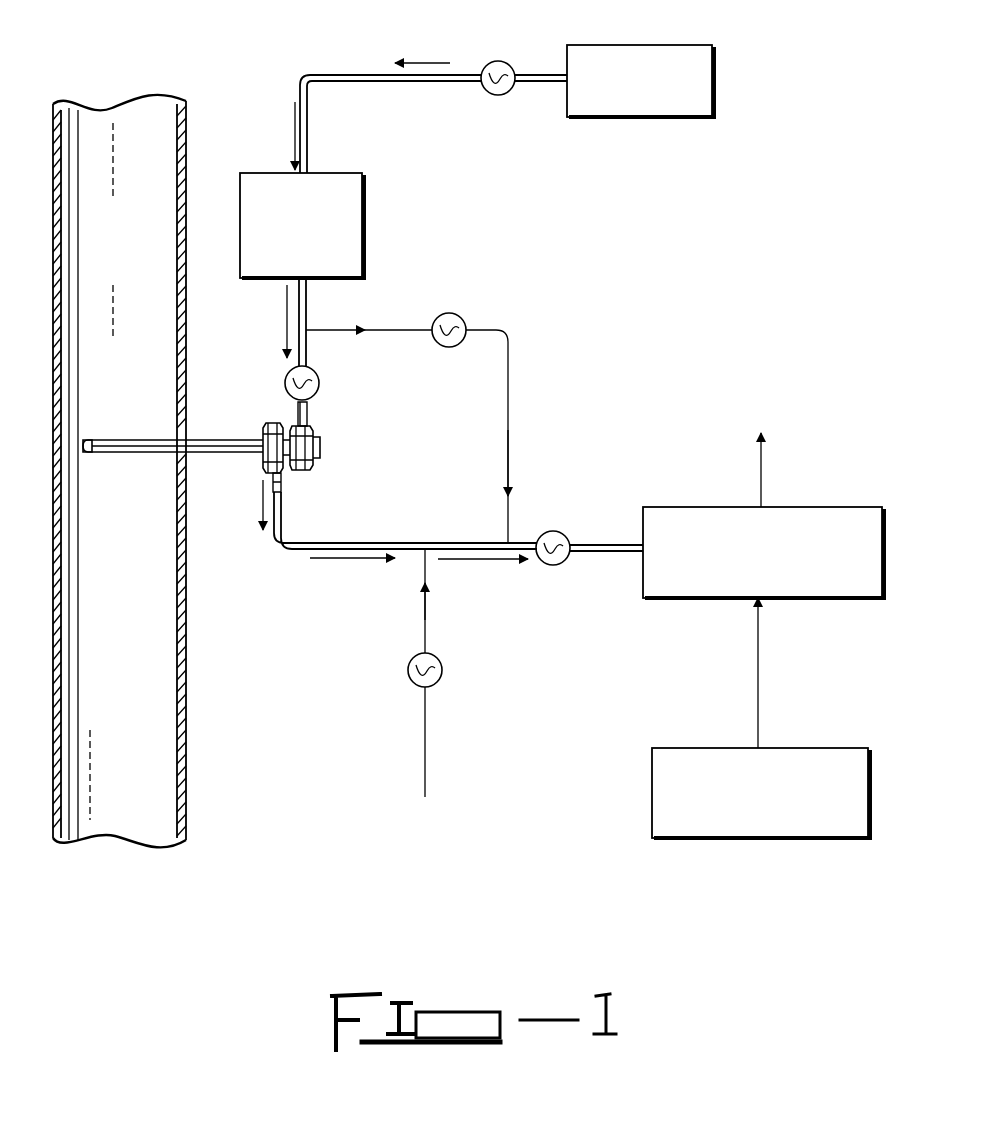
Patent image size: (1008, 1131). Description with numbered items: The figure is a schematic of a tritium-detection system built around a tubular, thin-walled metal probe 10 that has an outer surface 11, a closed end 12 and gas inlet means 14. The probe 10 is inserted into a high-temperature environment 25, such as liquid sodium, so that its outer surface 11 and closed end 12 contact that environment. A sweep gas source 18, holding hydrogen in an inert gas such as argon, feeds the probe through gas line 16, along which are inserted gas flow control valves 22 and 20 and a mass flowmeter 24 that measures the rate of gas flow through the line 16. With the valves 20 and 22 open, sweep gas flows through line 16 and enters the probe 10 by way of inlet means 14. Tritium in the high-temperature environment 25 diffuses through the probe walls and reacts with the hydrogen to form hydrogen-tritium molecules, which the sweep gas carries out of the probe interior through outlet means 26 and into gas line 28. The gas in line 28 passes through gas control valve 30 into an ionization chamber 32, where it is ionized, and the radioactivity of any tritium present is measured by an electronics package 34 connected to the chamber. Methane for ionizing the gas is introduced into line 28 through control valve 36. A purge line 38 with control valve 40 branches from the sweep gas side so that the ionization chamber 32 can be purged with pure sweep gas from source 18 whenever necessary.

The probe 10 is at (232, 436).
The outer surface 11 is at (150, 453).
The closed end 12 is at (94, 439).
The gas inlet means 14 is at (309, 414).
The gas line 16 is at (308, 308).
The sweep gas source 18 is at (714, 86).
The gas flow control valve 20 is at (320, 383).
The gas flow control valve 22 is at (501, 62).
The mass flowmeter 24 is at (328, 185).
The high-temperature environment 25 is at (135, 696).
The outlet means 26 is at (283, 486).
The gas line 28 is at (372, 541).
The gas control valve 30 is at (548, 566).
The ionization chamber 32 is at (713, 516).
The electronics package 34 is at (718, 760).
The control valve 36 is at (410, 672).
The purge line 38 is at (508, 443).
The control valve 40 is at (462, 294).